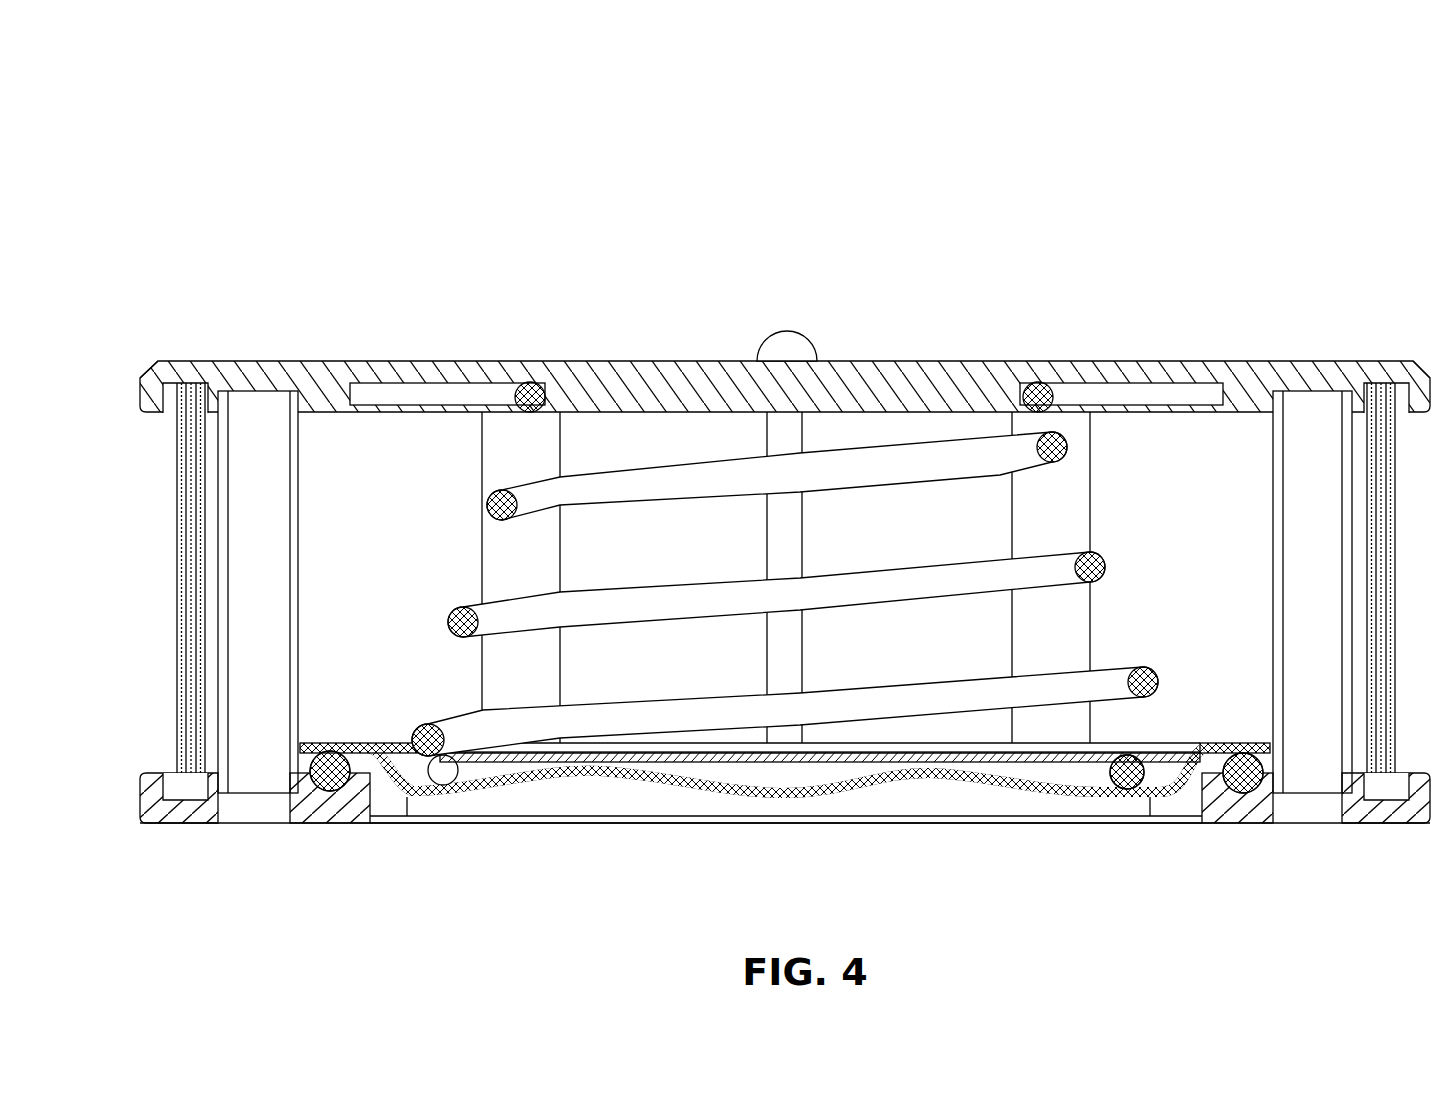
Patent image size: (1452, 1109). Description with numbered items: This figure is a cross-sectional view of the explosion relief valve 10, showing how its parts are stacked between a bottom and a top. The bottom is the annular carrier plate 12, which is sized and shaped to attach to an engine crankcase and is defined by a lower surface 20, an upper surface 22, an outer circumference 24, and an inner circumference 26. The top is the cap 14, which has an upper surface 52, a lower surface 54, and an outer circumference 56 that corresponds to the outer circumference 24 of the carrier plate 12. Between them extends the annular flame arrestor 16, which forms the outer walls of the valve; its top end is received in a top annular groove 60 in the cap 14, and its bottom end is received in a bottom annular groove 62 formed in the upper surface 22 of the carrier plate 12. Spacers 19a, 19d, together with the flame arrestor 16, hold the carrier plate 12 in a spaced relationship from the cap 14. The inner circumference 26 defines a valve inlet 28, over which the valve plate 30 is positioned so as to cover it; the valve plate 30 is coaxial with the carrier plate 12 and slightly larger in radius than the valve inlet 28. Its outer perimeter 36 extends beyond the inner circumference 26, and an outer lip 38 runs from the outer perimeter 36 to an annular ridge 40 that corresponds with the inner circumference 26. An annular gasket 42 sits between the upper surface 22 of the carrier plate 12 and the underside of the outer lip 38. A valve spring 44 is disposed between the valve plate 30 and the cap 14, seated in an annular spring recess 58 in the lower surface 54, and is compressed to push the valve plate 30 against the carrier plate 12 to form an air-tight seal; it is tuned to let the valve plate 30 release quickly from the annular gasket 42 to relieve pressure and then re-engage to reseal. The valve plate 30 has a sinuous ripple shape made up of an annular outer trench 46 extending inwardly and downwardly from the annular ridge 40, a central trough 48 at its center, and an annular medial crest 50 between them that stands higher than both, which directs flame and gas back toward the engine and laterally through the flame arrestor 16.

The explosion relief valve 10 is at (297, 120).
The carrier plate 12 is at (1252, 873).
The cap 14 is at (923, 325).
The annular flame arrestor 16 is at (1418, 597).
The spacer 19a is at (302, 538).
The spacer 19d is at (1276, 488).
The lower surface 20 is at (327, 825).
The upper surface 22 is at (363, 743).
The outer circumference 24 is at (140, 823).
The inner circumference 26 is at (375, 815).
The valve inlet 28 is at (696, 842).
The valve plate 30 is at (585, 795).
The outer perimeter 36 is at (1278, 742).
The outer lip 38 is at (1243, 740).
The annular ridge 40 is at (1200, 742).
The annular gasket 42 is at (1245, 794).
The valve spring 44 is at (667, 596).
The annular outer trench 46 is at (407, 800).
The central trough 48 is at (790, 800).
The medial crest 50 is at (604, 786).
The upper surface 52 is at (1220, 355).
The lower surface 54 is at (1248, 406).
The outer circumference 56 is at (145, 372).
The annular spring recess 58 is at (453, 404).
The top annular groove 60 is at (170, 403).
The bottom annular groove 62 is at (168, 774).